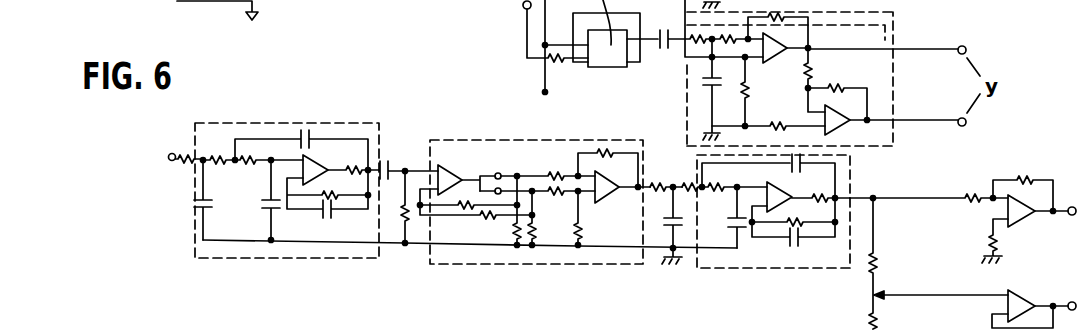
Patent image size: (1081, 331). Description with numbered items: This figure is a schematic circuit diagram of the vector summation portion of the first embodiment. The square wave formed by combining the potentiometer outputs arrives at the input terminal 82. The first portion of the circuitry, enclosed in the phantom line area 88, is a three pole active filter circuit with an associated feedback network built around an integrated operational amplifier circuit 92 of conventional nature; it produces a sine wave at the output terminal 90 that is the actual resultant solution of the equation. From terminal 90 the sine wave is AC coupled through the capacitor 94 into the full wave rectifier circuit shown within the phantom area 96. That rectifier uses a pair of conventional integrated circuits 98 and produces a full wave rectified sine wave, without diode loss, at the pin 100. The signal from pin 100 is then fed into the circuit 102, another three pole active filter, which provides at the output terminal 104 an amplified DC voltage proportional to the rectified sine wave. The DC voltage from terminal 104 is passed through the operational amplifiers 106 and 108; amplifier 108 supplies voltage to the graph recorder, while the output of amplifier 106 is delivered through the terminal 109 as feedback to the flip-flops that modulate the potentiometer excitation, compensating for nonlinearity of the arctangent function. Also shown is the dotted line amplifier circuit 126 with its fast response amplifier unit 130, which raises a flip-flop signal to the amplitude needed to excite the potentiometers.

The input terminal 82 is at (170, 161).
The phantom line area 88 is at (333, 158).
The output terminal 90 is at (379, 163).
The integrated operational amplifier circuit 92 is at (304, 184).
The capacitor 94 is at (391, 171).
The phantom area 96 is at (571, 206).
The integrated circuits 98 is at (447, 180).
The pin 100 is at (643, 177).
The circuit 102 is at (852, 163).
The output terminal 104 is at (875, 198).
The operational amplifier 106 is at (1017, 203).
The operational amplifier 108 is at (1020, 301).
The terminal 109 is at (547, 93).
The amplifier circuit 126 is at (825, 73).
The amplifier unit 130 is at (833, 120).